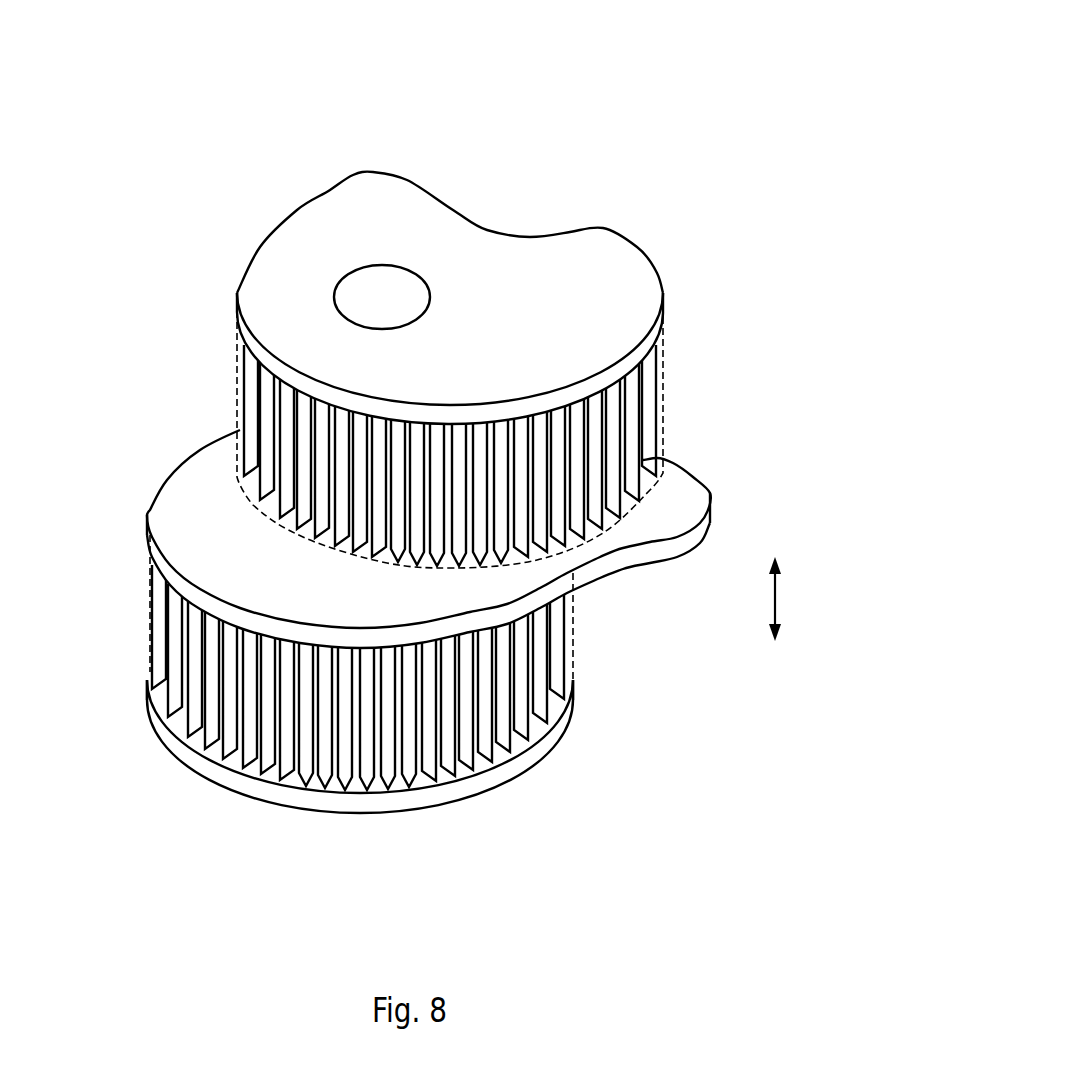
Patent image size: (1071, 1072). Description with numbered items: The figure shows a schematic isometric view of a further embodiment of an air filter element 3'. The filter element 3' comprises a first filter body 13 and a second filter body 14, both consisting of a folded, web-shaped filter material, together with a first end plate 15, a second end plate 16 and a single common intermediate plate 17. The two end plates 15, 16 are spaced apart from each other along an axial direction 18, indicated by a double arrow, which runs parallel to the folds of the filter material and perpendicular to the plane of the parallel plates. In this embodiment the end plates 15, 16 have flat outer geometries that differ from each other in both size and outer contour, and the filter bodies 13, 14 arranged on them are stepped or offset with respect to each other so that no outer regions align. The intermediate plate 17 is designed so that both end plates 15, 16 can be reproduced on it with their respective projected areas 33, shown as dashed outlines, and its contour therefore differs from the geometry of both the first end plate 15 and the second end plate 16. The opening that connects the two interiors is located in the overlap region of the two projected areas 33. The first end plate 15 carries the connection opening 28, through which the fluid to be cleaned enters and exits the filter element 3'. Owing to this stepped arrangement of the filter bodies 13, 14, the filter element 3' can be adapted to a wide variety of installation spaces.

The filter element 3' is at (461, 470).
The first end plate 15 is at (386, 200).
The connection opening 28 is at (373, 295).
The first filter body 13 is at (268, 412).
The intermediate plate 17 is at (687, 500).
The projected areas 33 is at (253, 505).
The axial direction 18 is at (777, 598).
The second filter body 14 is at (178, 650).
The second end plate 16 is at (457, 793).